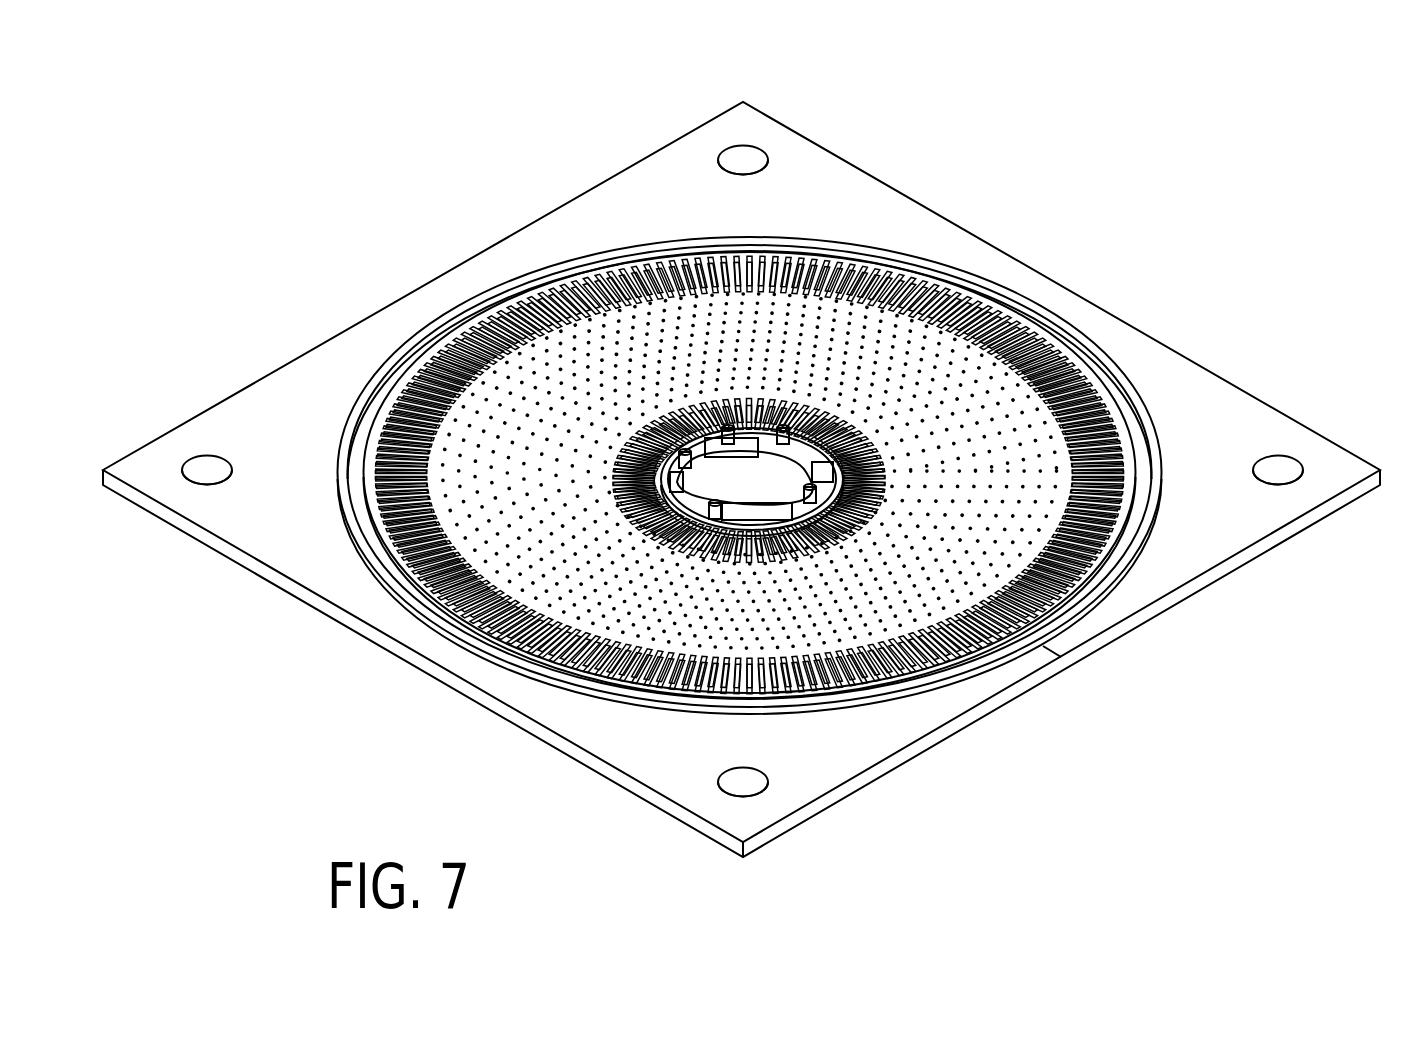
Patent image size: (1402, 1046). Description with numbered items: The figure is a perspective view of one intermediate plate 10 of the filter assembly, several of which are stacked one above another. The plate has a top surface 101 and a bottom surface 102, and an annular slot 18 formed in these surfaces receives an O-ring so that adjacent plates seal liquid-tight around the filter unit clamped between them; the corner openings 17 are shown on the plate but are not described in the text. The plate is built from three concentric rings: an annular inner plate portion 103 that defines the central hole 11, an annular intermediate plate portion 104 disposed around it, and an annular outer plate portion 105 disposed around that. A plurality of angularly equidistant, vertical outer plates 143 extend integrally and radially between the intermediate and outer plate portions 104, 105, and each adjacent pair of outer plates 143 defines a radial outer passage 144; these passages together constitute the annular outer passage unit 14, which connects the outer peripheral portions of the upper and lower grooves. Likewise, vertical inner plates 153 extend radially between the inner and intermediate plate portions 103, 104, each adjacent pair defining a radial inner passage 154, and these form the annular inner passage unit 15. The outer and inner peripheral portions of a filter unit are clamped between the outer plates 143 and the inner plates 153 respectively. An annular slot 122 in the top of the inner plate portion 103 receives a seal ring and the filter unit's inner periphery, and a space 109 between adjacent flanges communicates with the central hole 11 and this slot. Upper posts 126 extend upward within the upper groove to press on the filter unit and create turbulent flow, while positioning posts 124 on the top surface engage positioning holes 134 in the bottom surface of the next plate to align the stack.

The intermediate plate 10 is at (140, 508).
The top surface 101 is at (262, 535).
The bottom surface 102 is at (285, 597).
The mounting holes 17 is at (1282, 462).
The annular slot 18 is at (1157, 447).
The central hole 11 is at (985, 572).
The outer plate 143 is at (537, 626).
The outer passage unit 14 is at (823, 270).
The radial outer passage 144 is at (752, 469).
The upper post 126 is at (538, 357).
The intermediate plate portion 104 is at (907, 580).
The annular slot 122 is at (637, 512).
The inner passage unit 15 is at (743, 552).
The radial inner passage 154 is at (732, 608).
The inner plate portion 103 is at (790, 545).
The space 109 is at (696, 400).
The inner plate 153 is at (815, 395).
The positioning hole 134 is at (773, 415).
The positioning post 124 is at (773, 517).
The outer plate portion 105 is at (1052, 652).